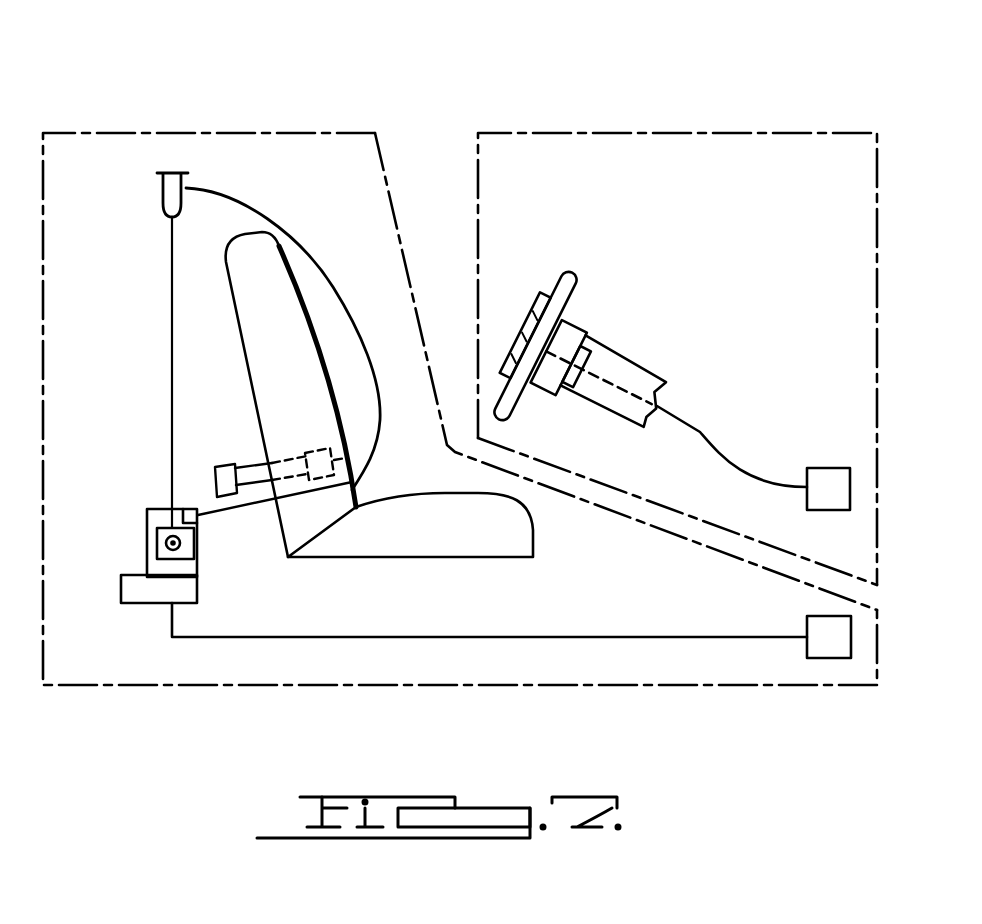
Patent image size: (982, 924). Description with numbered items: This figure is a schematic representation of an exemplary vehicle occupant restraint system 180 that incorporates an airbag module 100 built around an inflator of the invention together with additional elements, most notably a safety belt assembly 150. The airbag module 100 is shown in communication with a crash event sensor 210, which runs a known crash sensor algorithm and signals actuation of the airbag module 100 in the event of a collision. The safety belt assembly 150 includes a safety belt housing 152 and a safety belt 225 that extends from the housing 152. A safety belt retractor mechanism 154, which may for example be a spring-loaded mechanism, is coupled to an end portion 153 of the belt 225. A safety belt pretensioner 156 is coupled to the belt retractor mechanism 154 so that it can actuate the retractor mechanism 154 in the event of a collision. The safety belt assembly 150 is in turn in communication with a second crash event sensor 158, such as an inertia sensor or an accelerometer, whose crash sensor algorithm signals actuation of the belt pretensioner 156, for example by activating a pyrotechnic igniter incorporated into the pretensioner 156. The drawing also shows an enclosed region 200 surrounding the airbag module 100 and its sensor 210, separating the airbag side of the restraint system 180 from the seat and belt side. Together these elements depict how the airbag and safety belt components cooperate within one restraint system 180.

The airbag module 100 is at (528, 316).
The safety belt assembly 150 is at (392, 685).
The safety belt housing 152 is at (158, 552).
The end portion 153 is at (189, 490).
The safety belt retractor mechanism 154 is at (162, 509).
The safety belt pretensioner 156 is at (145, 594).
The crash event sensor 158 is at (807, 624).
The vehicle occupant restraint system 180 is at (352, 100).
The steering system area 200 is at (634, 125).
The crash event sensor 210 is at (828, 468).
The safety belt 225 is at (308, 237).